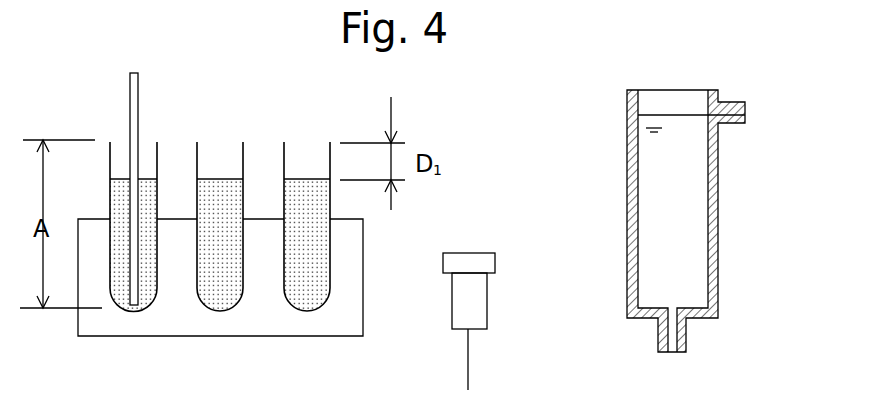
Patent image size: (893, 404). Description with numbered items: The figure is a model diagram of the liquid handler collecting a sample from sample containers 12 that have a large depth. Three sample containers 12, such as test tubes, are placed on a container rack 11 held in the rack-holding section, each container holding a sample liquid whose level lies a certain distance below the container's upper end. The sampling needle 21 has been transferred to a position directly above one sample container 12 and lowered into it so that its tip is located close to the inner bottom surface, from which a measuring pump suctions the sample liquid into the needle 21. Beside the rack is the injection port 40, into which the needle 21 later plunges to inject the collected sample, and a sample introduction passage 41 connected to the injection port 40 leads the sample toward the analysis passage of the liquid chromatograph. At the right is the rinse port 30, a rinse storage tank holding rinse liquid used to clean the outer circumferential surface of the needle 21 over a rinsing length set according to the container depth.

The container rack 11 is at (363, 312).
The sample containers 12 is at (158, 148).
The sampling needle 21 is at (138, 88).
The rinse port 30 is at (718, 212).
The injection port 40 is at (495, 263).
The sample introduction passage 41 is at (468, 367).